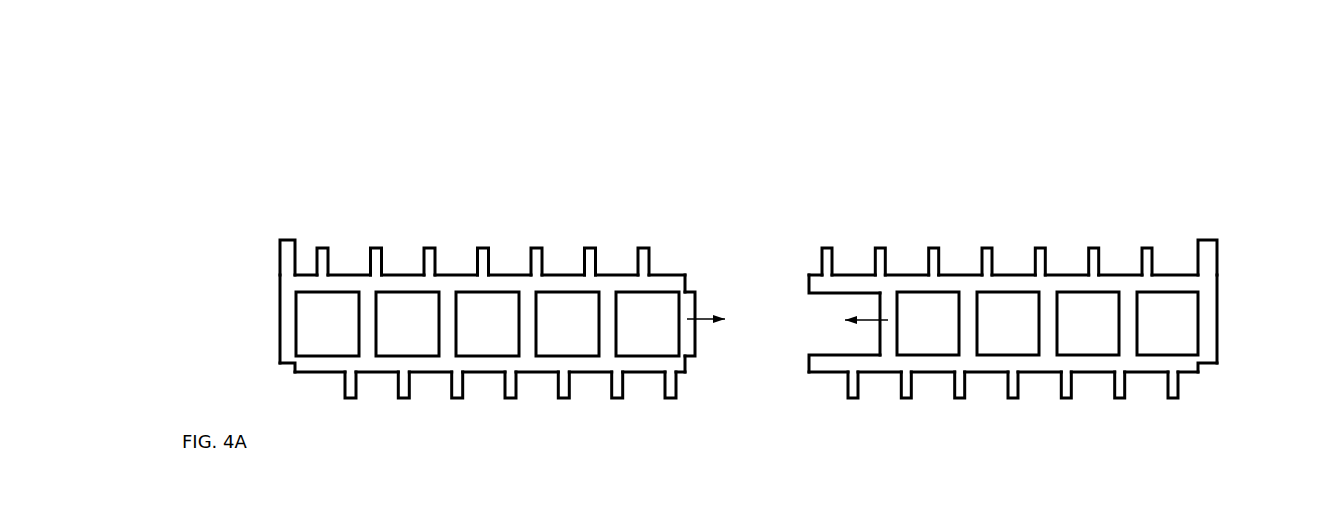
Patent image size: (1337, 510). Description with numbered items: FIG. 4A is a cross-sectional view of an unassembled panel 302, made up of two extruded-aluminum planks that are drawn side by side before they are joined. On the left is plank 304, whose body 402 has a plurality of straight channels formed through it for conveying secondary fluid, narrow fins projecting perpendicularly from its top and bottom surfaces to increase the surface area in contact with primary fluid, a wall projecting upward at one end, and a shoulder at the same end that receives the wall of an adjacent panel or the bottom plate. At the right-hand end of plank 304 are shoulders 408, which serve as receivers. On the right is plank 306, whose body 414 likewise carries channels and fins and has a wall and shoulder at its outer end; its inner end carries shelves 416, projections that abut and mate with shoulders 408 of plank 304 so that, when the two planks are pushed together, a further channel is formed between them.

The panel 302 is at (247, 107).
The plank 304 is at (332, 212).
The plank 306 is at (942, 213).
The body 402 is at (605, 363).
The shoulders 408 is at (687, 290).
The body 414 is at (970, 363).
The shelves 416 is at (808, 282).